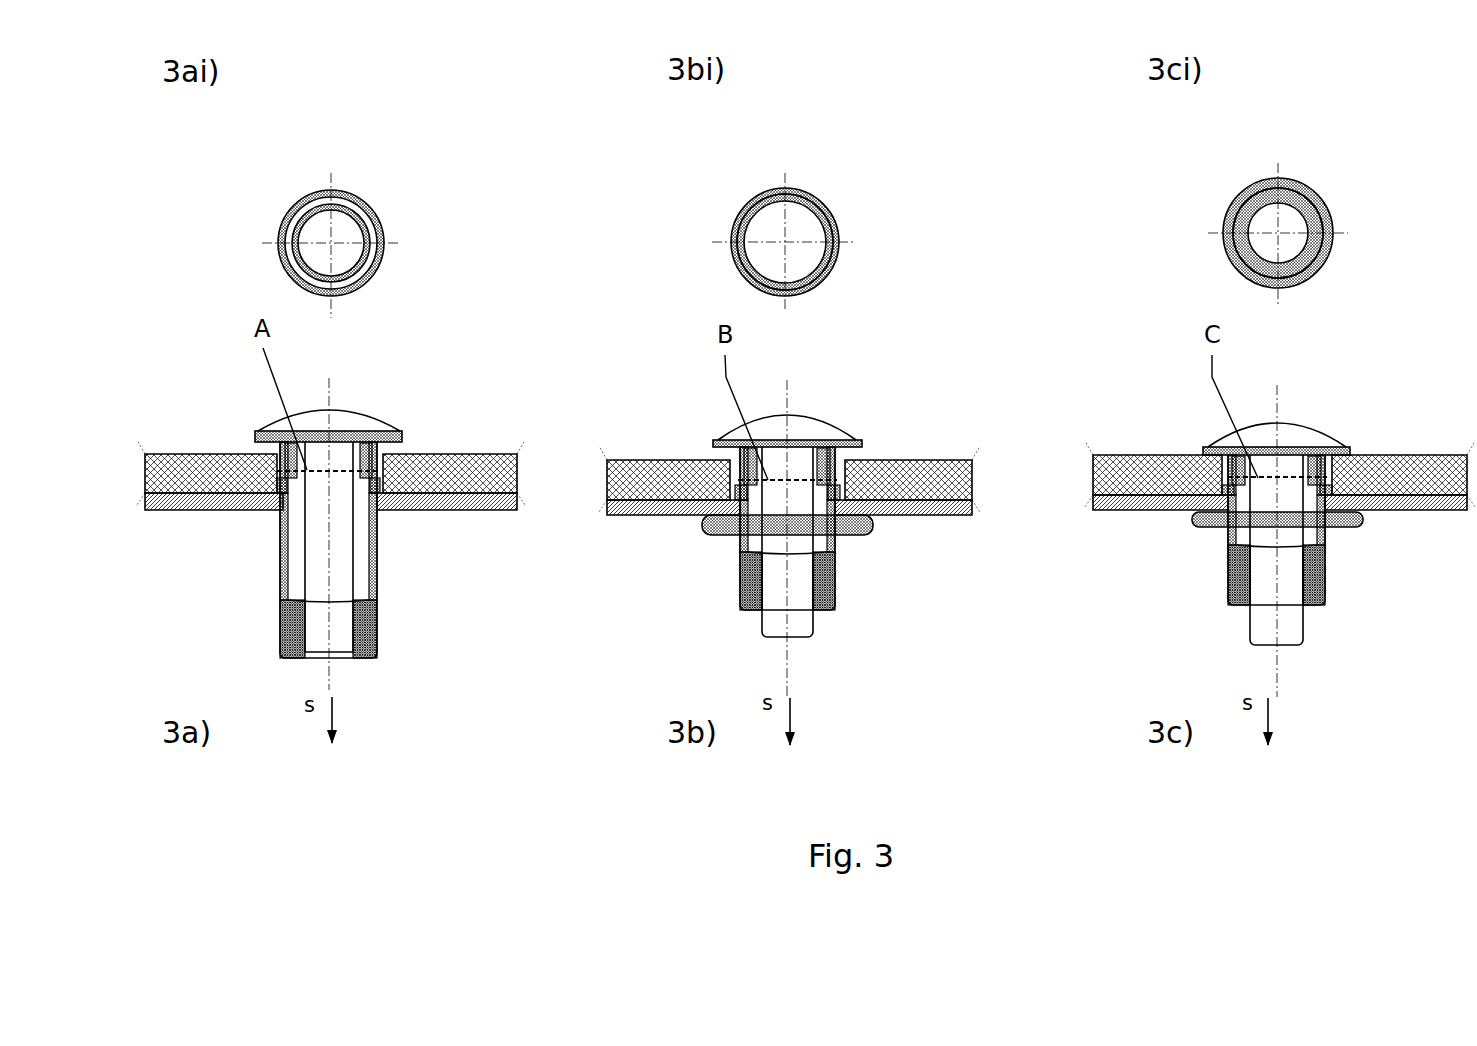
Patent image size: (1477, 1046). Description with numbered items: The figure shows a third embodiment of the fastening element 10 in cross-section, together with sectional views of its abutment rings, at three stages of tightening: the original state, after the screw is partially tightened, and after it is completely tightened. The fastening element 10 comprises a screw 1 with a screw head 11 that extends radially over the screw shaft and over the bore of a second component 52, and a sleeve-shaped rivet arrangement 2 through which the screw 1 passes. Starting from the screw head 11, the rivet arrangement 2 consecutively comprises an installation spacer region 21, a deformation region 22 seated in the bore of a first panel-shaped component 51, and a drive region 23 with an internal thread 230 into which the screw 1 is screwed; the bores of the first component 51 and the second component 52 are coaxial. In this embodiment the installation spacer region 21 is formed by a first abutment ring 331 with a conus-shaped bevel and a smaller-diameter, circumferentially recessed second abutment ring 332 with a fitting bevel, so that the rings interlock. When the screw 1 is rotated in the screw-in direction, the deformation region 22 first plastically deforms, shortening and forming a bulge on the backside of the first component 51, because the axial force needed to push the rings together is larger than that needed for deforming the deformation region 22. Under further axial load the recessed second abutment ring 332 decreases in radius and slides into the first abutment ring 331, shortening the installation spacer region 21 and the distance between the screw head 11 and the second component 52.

In FIG. 3a, the screw 1 is at (338, 383).
In FIG. 3b, the screw 1 is at (795, 391).
In FIG. 3c, the screw 1 is at (1279, 395).
In FIG. 3a, the screw head 11 is at (357, 401).
In FIG. 3b, the screw head 11 is at (816, 406).
In FIG. 3c, the screw head 11 is at (1307, 410).
In FIG. 3a, the rivet arrangement 2 is at (288, 550).
In FIG. 3b, the rivet arrangement 2 is at (747, 528).
In FIG. 3c, the rivet arrangement 2 is at (1238, 530).
In FIG. 3a, the installation spacer region 21 is at (395, 442).
In FIG. 3b, the installation spacer region 21 is at (855, 443).
In FIG. 3c, the installation spacer region 21 is at (1346, 445).
In FIG. 3a, the deformation region 22 is at (381, 546).
In FIG. 3b, the deformation region 22 is at (833, 535).
In FIG. 3c, the deformation region 22 is at (1327, 529).
In FIG. 3a, the drive region 23 is at (386, 630).
In FIG. 3b, the drive region 23 is at (847, 587).
In FIG. 3c, the drive region 23 is at (1335, 581).
In FIG. 3a, the internal thread 230 is at (271, 631).
In FIG. 3b, the internal thread 230 is at (731, 585).
In FIG. 3c, the internal thread 230 is at (1224, 576).
In FIG. 3a, the fastening element 10 is at (387, 589).
In FIG. 3b, the fastening element 10 is at (856, 591).
In FIG. 3c, the fastening element 10 is at (1334, 595).
In FIG. 3a, the first panel-shaped component 51 is at (312, 527).
In FIG. 3b, the first panel-shaped component 51 is at (773, 531).
In FIG. 3c, the first panel-shaped component 51 is at (1274, 526).
In FIG. 3a, the second component 52 is at (311, 459).
In FIG. 3b, the second component 52 is at (770, 463).
In FIG. 3c, the second component 52 is at (1262, 460).
In FIG. 3ai, the first abutment ring 331 is at (276, 231).
In FIG. 3bi, the first abutment ring 331 is at (735, 232).
In FIG. 3ci, the first abutment ring 331 is at (1225, 228).
In FIG. 3a, the first abutment ring 331 is at (270, 444).
In FIG. 3b, the first abutment ring 331 is at (730, 450).
In FIG. 3c, the first abutment ring 331 is at (1221, 447).
In FIG. 3ai, the second abutment ring 332 is at (290, 211).
In FIG. 3bi, the second abutment ring 332 is at (746, 208).
In FIG. 3ci, the second abutment ring 332 is at (1238, 205).
In FIG. 3a, the second abutment ring 332 is at (266, 422).
In FIG. 3b, the second abutment ring 332 is at (725, 429).
In FIG. 3c, the second abutment ring 332 is at (1215, 429).